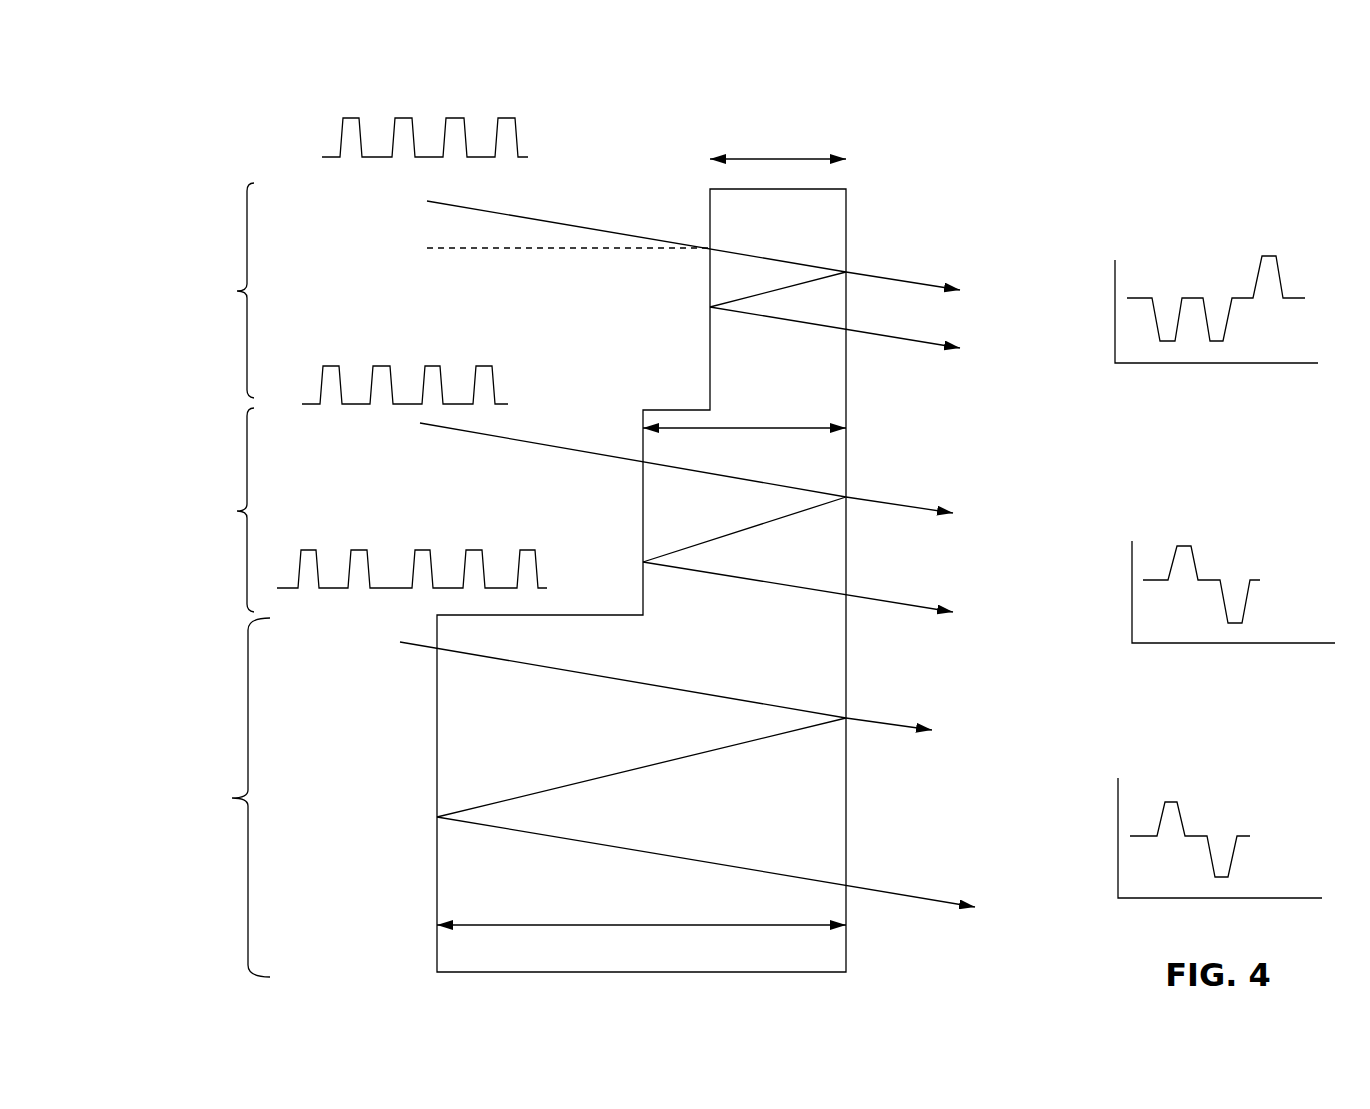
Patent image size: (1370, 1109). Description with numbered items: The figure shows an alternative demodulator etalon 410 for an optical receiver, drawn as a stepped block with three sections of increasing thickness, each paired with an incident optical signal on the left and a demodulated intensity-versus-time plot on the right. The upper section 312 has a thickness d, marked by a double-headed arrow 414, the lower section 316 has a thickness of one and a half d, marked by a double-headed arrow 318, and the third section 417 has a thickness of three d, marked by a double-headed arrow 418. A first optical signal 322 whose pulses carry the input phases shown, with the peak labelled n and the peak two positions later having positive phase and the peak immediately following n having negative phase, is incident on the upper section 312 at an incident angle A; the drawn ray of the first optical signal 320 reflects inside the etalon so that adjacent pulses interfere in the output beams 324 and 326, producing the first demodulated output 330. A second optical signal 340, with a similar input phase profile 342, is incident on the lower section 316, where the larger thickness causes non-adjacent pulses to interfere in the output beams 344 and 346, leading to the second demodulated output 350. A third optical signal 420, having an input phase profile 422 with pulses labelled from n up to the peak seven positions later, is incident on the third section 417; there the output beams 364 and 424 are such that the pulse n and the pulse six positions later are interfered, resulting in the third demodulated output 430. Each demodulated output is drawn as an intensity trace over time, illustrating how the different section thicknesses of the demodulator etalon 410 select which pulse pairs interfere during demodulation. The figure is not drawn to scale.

The upper section 312 is at (218, 290).
The lower section 316 is at (218, 510).
The third section 417 is at (219, 797).
The first optical signal 322 is at (518, 124).
The first optical signal 320 is at (557, 220).
The thickness d 414 is at (800, 158).
The demodulator etalon 410 is at (846, 206).
The output beam 324 is at (876, 273).
The output beam 326 is at (865, 333).
The double-headed arrow 318 is at (765, 420).
The input phase pattern 342 is at (495, 378).
The second optical signal 340 is at (520, 437).
The input phase profile 422 is at (538, 575).
The output beam 344 is at (882, 503).
The output beam 346 is at (872, 600).
The third optical signal 420 is at (640, 683).
The thickness 3d 418 is at (525, 923).
The output beam 424 is at (860, 722).
The output beam 364 is at (880, 893).
The first demodulated output 330 is at (1207, 318).
The second demodulated output 350 is at (1258, 578).
The third demodulated output 430 is at (1245, 834).